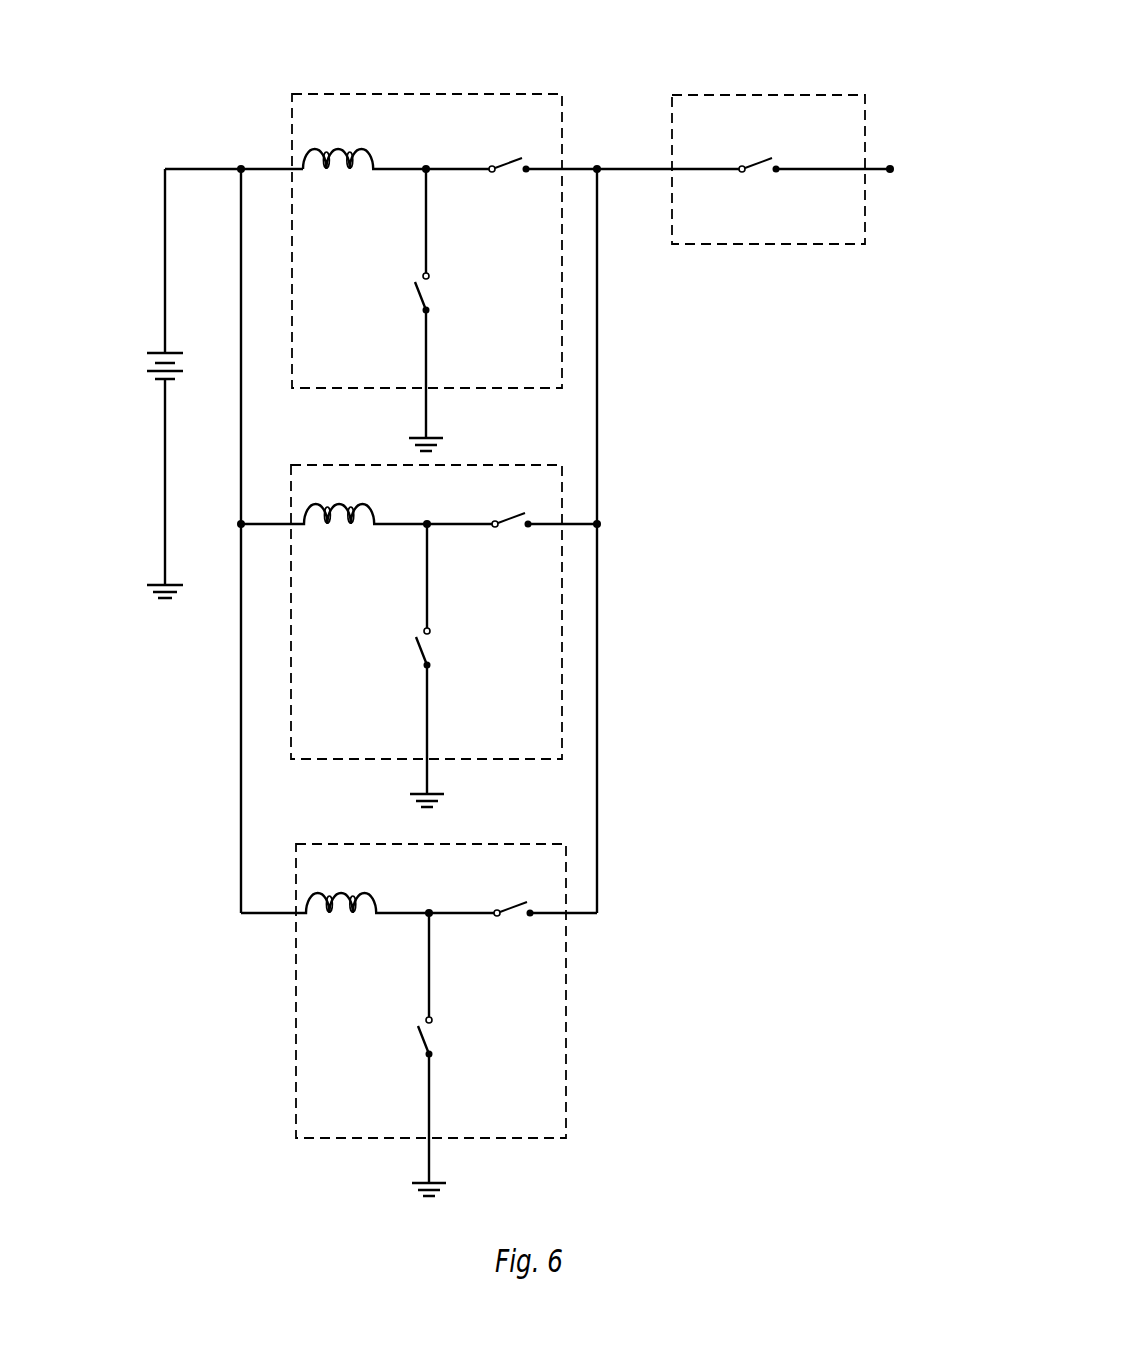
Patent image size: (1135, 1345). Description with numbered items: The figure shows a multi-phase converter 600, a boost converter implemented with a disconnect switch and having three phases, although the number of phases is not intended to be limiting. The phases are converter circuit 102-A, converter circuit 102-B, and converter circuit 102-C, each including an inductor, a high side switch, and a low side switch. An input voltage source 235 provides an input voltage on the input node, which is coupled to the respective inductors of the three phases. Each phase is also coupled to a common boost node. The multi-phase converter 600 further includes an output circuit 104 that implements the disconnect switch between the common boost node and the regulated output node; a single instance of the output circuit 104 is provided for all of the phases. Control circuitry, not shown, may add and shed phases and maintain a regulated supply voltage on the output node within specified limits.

The multi-phase converter 600 is at (527, 32).
The input voltage source 235 is at (138, 381).
The converter circuit 102-A is at (406, 383).
The converter circuit 102-B is at (406, 753).
The converter circuit 102-C is at (412, 1133).
The output circuit 104 is at (838, 132).